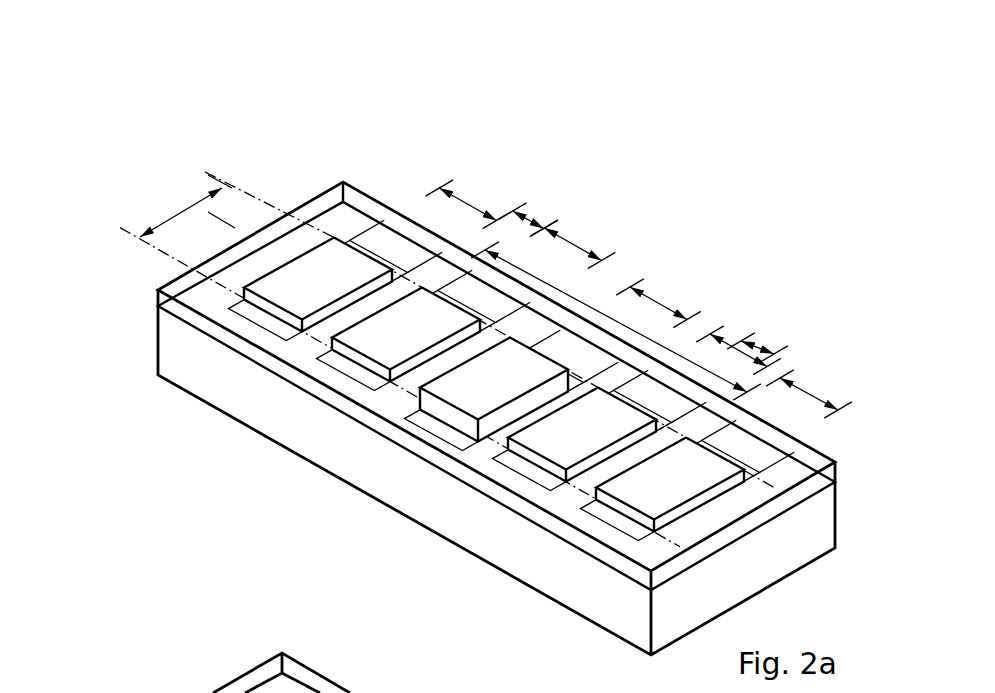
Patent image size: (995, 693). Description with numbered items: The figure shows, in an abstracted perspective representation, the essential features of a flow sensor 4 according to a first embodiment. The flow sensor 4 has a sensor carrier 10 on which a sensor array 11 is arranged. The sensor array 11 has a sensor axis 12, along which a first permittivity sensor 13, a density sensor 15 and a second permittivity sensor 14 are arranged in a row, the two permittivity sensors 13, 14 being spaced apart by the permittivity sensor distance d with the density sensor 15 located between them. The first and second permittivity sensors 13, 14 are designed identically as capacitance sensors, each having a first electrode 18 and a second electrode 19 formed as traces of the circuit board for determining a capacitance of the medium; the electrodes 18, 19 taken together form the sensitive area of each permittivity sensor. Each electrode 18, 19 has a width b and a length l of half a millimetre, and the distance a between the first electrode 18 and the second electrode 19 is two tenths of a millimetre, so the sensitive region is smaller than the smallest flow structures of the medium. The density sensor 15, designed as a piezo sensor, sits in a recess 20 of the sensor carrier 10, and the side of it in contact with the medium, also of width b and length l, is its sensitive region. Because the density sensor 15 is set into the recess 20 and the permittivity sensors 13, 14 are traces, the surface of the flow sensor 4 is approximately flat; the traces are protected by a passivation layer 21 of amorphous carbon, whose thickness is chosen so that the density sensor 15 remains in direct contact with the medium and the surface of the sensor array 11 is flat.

The flow sensor 4 is at (501, 344).
The sensor carrier 10 is at (205, 382).
The passivation layer 21 is at (180, 308).
The sensor axis 12 is at (409, 326).
The first permittivity sensor 13 is at (477, 407).
The second permittivity sensor 14 is at (578, 488).
The density sensor 15 is at (437, 421).
The sensor array 11 is at (602, 291).
The first electrode 18 is at (350, 268).
The second electrode 19 is at (430, 307).
The recess 20 is at (575, 372).
The permittivity sensor distance d is at (575, 295).
The distance between the first electrode and the second electrode a is at (525, 222).
The width b is at (455, 192).
The length l is at (181, 201).